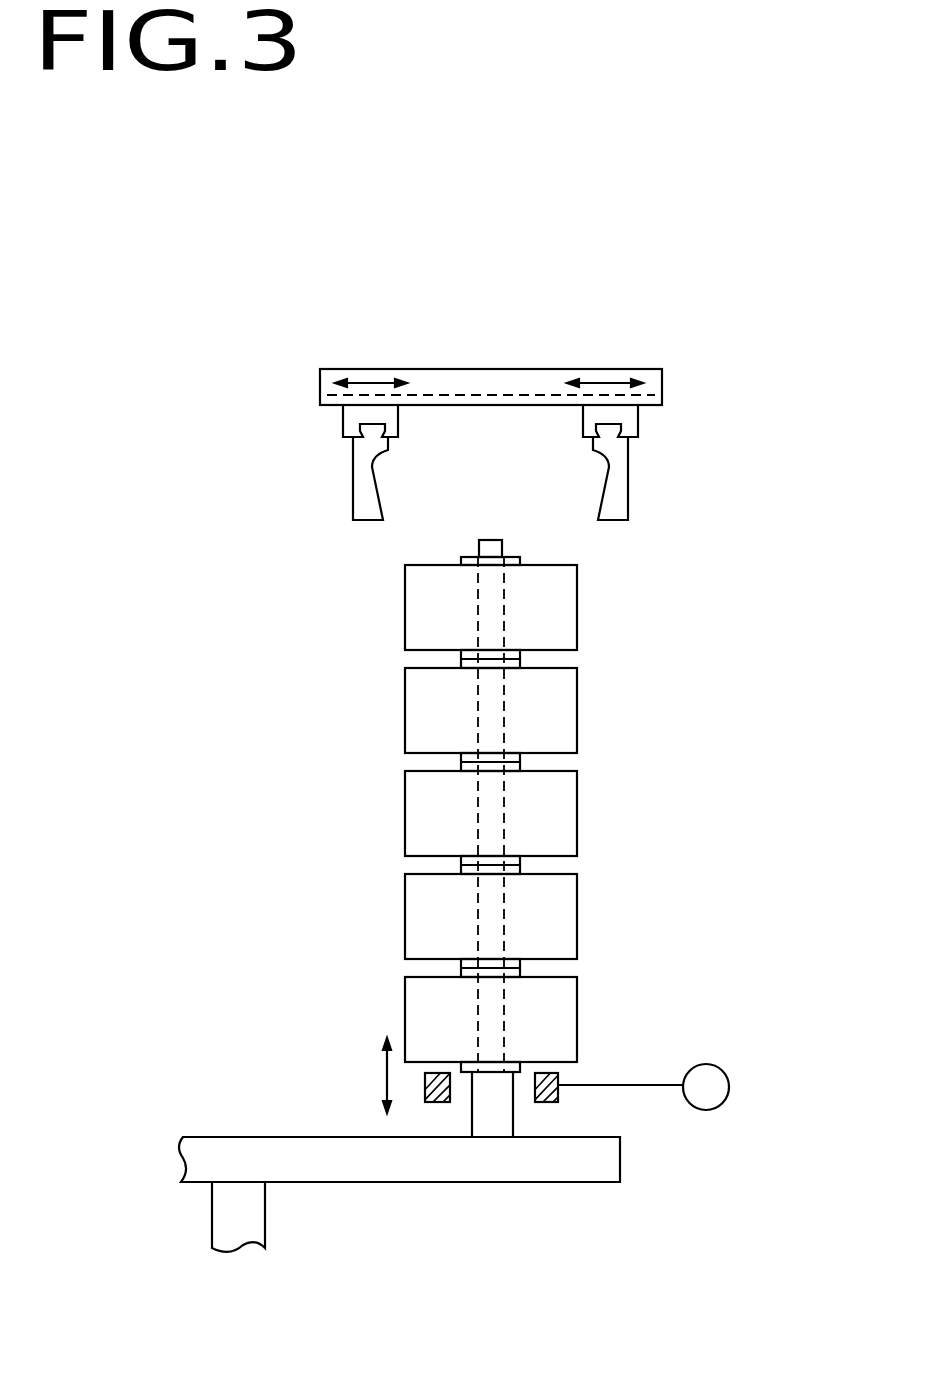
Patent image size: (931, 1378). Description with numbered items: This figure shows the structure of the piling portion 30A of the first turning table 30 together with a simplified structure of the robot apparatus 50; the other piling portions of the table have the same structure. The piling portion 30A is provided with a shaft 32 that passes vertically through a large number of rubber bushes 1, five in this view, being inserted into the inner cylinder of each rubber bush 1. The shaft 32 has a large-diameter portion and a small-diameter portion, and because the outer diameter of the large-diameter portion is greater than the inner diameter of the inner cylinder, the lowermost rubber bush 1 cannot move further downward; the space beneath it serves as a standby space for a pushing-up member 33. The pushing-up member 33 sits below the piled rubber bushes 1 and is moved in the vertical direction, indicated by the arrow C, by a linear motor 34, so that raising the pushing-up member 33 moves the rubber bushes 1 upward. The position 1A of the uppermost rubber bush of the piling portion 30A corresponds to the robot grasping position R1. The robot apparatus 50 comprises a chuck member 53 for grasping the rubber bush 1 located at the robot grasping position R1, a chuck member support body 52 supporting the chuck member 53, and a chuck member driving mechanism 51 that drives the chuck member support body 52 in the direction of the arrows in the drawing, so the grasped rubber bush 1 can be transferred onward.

The robot apparatus 50 is at (532, 377).
The chuck member driving mechanism 51 is at (662, 378).
The chuck member support body 52 is at (343, 423).
The chuck member 53 is at (353, 505).
The robot grasping position R1 is at (431, 806).
The rubber bush 1 is at (541, 813).
The position of the uppermost rubber bush 1A is at (577, 607).
The piling portion 30A is at (431, 912).
The shaft 32 is at (493, 1122).
The pushing-up member 33 is at (548, 1102).
The linear motor 34 is at (722, 1063).
The first turning table 30 is at (620, 1160).
The lift direction C is at (368, 1075).